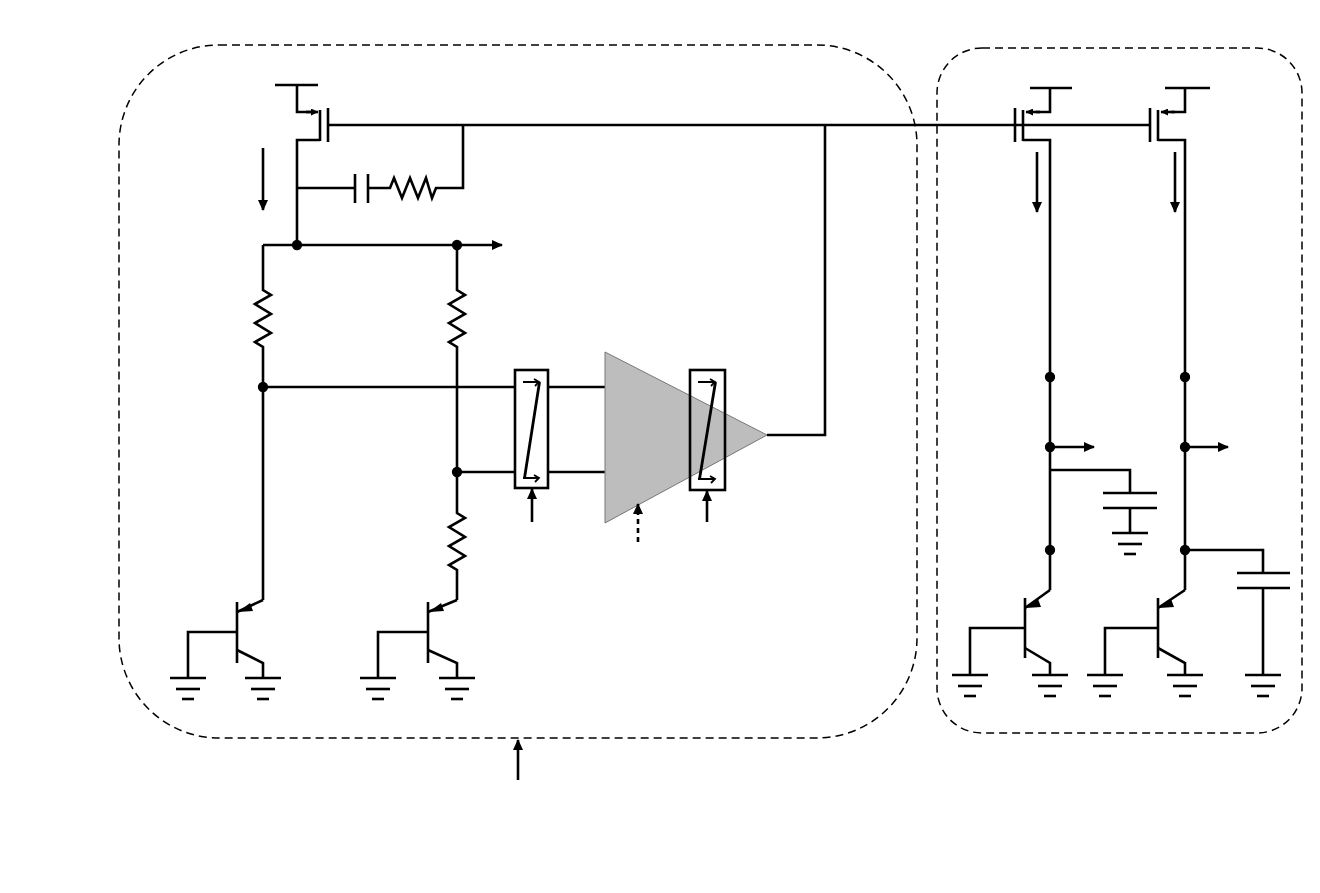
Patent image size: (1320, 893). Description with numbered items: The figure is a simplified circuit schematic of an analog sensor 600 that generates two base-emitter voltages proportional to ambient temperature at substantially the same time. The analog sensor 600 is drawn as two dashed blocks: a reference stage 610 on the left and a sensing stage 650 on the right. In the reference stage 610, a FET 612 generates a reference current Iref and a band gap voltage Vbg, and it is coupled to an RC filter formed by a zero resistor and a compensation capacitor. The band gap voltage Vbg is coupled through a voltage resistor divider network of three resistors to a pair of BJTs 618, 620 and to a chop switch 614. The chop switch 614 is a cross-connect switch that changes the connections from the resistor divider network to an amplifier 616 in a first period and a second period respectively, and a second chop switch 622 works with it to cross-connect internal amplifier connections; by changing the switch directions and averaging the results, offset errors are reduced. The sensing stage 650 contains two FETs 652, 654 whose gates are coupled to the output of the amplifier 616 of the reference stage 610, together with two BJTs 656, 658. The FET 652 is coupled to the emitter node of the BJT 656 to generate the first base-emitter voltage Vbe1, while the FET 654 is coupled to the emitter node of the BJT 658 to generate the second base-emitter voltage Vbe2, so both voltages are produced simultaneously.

The analog sensor 600 is at (718, 436).
The reference stage 610 is at (699, 679).
The FET 612 is at (376, 110).
The chop switch 614 is at (548, 361).
The amplifier 616 is at (636, 349).
The BJT 618 is at (299, 634).
The BJT 620 is at (491, 634).
The second chop switch 622 is at (724, 361).
The sensing stage 650 is at (1238, 366).
The FET 652 is at (1004, 107).
The FET 654 is at (1231, 116).
The BJT 656 is at (1101, 616).
The BJT 658 is at (1229, 616).